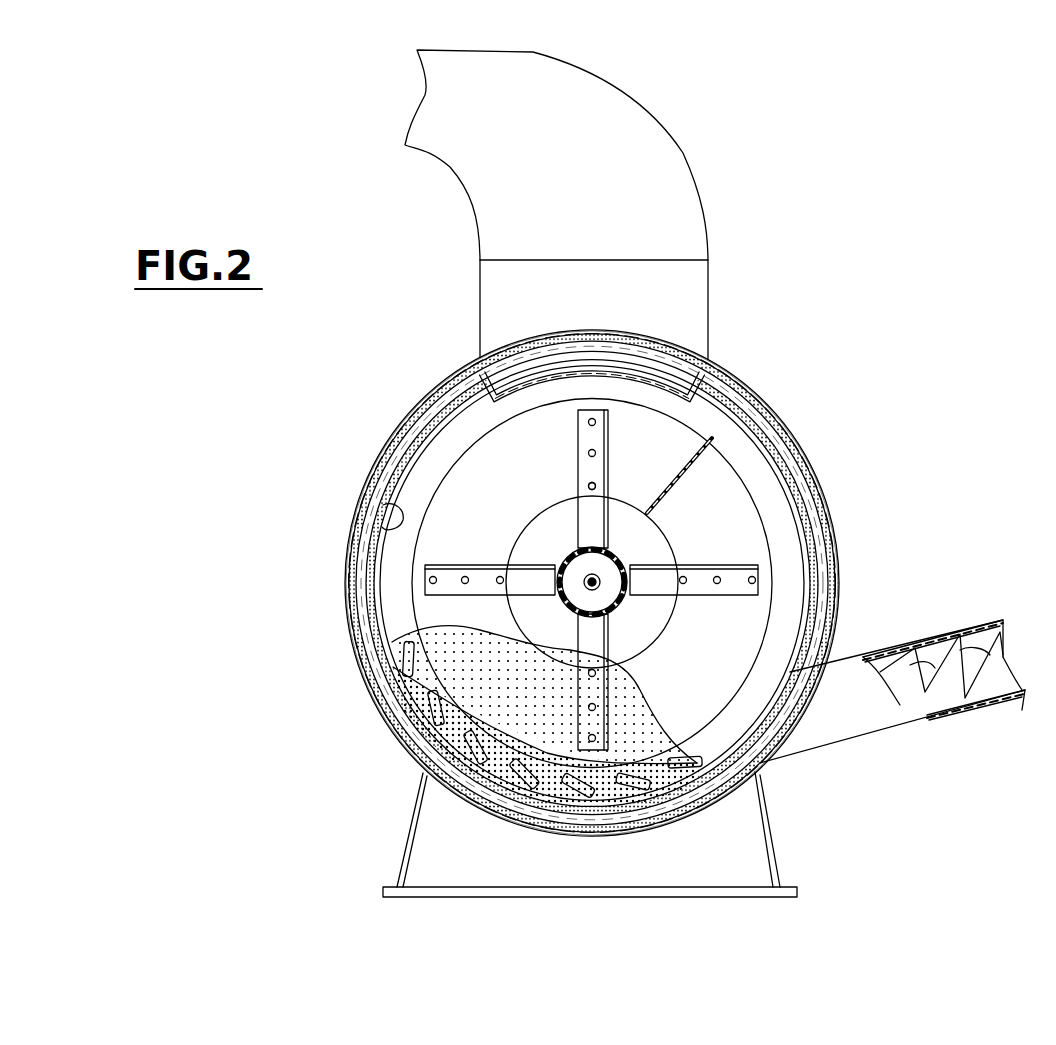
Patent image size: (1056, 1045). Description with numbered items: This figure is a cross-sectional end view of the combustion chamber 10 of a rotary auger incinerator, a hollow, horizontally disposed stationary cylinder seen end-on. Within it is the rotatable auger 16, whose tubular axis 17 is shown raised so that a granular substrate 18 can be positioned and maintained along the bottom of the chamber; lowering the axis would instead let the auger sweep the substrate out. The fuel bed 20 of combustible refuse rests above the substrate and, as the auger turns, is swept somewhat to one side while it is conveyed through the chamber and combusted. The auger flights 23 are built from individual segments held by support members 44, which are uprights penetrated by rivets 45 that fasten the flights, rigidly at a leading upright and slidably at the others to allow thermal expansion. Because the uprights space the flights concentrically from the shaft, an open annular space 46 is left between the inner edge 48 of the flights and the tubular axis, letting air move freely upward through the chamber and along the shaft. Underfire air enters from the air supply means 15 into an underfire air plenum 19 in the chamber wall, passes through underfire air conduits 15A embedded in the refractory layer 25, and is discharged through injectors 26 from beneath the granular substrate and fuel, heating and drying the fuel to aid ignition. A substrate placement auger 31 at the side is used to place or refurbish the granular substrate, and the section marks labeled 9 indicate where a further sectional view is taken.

The combustion chamber 10 is at (836, 512).
The air supply means 15 is at (668, 183).
The underfire air conduits 15A is at (374, 514).
The auger 16 is at (390, 549).
The tubular axis 17 is at (635, 600).
The granular substrate 18 is at (455, 717).
The underfire air plenum 19 is at (609, 373).
The fuel bed 20 is at (470, 667).
The auger flights 23 is at (815, 628).
The refractory layer 25 is at (380, 483).
The injectors 26 is at (530, 812).
The substrate placement auger 31 is at (930, 672).
The support members 44 is at (695, 572).
The rivets 45 is at (588, 487).
The open annular space 46 is at (648, 551).
The inner edge 48 is at (523, 520).
The section line 9 is at (553, 412).